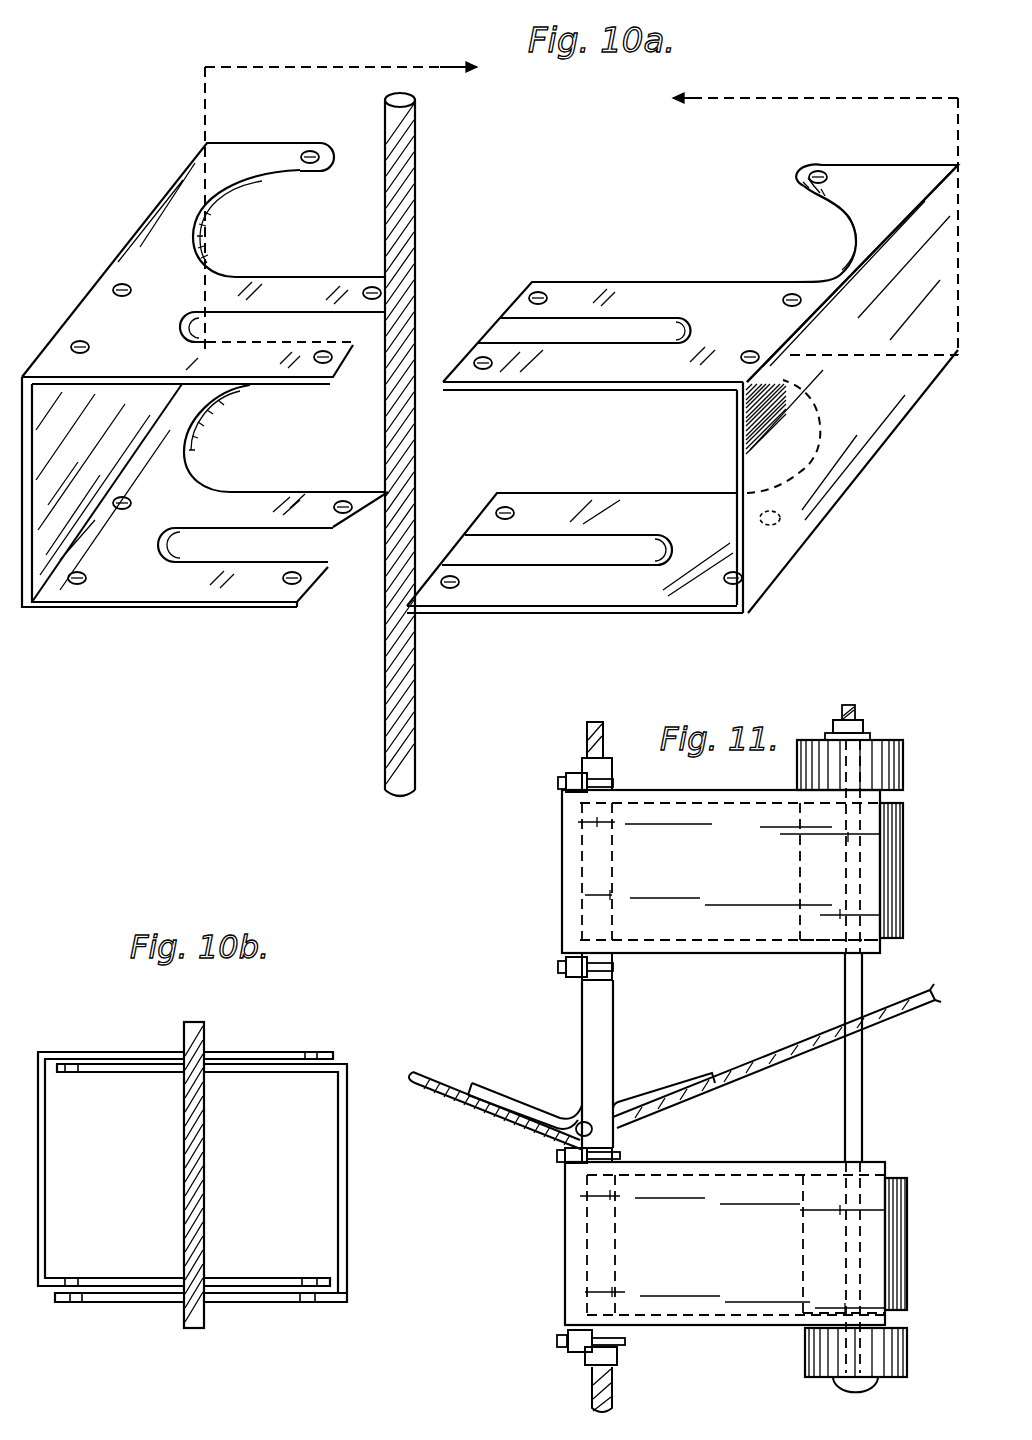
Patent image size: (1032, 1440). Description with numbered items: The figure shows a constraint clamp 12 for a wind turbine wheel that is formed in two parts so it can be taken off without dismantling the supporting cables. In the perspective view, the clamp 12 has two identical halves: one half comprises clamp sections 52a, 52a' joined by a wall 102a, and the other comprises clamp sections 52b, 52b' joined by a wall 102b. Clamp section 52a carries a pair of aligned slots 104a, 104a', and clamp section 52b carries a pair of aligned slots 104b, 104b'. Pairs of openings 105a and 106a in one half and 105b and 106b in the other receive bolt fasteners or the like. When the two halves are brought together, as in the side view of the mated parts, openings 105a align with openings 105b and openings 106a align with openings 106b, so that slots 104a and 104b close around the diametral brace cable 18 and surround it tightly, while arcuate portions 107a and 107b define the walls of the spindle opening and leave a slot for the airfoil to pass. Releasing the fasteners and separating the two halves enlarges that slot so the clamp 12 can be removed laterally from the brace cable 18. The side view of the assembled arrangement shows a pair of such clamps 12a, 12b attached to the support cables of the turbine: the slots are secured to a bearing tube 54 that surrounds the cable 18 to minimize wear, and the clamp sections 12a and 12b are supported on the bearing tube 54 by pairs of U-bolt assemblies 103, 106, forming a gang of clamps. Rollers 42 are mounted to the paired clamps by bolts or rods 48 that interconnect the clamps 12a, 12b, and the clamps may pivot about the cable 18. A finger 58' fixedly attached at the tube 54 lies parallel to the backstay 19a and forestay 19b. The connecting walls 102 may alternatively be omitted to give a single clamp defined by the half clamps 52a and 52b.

In FIG. 10A, the constraint clamp 12 is at (253, 710).
In FIG. 11, the clamp section 12a is at (720, 788).
In FIG. 11, the clamp section 12b is at (748, 1160).
In FIG. 10A, the diametral brace cable 18 is at (415, 166).
In FIG. 10B, the diametral brace cable 18 is at (205, 1142).
In FIG. 11, the diametral brace cable 18 is at (587, 741).
In FIG. 11, the backstay 19a is at (443, 1087).
In FIG. 11, the forestay 19b is at (783, 1050).
In FIG. 11, the roller 42 is at (893, 745).
In FIG. 11, the rod 48 is at (862, 1074).
In FIG. 10A, the clamp section 52a is at (187, 237).
In FIG. 10B, the clamp section 52a is at (185, 1028).
In FIG. 10A, the clamp section 52a' is at (210, 526).
In FIG. 10A, the clamp section 52b is at (700, 253).
In FIG. 10A, the clamp section 52b' is at (575, 572).
In FIG. 10B, the clamp section 52b' is at (201, 1321).
In FIG. 11, the bearing tube 54 is at (614, 1004).
In FIG. 11, the finger 58' is at (591, 1089).
In FIG. 11, the connecting wall 102 is at (748, 886).
In FIG. 10A, the wall 102a is at (100, 446).
In FIG. 10B, the wall 102a is at (38, 1285).
In FIG. 10A, the wall 102b is at (862, 484).
In FIG. 10B, the wall 102b is at (348, 1227).
In FIG. 11, the U-bolt assembly 103 is at (556, 782).
In FIG. 10A, the slot 104a is at (282, 291).
In FIG. 10A, the slot 104a' is at (245, 607).
In FIG. 10A, the slot 104b is at (584, 374).
In FIG. 10A, the slot 104b' is at (550, 607).
In FIG. 10A, the opening 105a is at (117, 287).
In FIG. 10A, the opening 105b is at (485, 357).
In FIG. 11, the U-bolt assembly 106 is at (556, 1157).
In FIG. 10A, the opening 106a is at (325, 350).
In FIG. 10A, the opening 106b is at (751, 350).
In FIG. 10A, the arcuate portion 107a is at (230, 190).
In FIG. 10A, the arcuate portion 107b is at (852, 240).